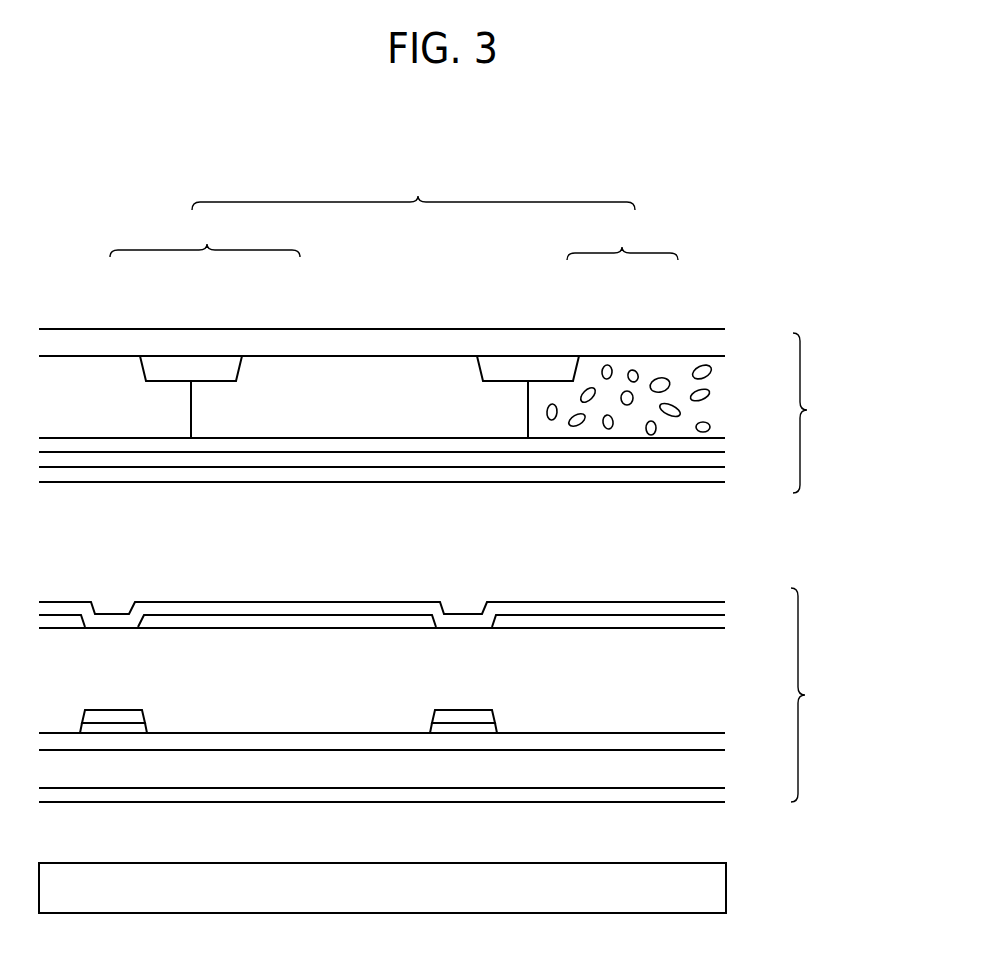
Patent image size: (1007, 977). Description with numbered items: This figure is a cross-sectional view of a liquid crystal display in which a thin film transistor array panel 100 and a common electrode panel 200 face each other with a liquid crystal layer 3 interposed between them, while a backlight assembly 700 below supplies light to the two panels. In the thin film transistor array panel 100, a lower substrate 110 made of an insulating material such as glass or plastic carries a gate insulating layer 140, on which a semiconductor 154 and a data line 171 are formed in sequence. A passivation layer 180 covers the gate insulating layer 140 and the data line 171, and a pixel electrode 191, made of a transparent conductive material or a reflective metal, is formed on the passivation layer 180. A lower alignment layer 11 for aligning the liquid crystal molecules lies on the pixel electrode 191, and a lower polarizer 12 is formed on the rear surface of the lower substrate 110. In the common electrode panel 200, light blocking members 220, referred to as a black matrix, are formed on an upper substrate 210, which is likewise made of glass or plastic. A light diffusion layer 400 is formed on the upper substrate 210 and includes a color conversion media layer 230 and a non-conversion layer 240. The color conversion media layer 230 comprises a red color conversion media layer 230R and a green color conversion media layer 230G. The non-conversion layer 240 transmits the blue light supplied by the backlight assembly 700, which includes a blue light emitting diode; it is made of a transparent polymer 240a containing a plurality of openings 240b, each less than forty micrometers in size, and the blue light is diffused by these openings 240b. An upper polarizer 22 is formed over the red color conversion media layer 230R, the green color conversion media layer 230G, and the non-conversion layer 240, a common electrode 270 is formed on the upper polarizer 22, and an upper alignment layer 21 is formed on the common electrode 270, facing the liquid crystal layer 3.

The liquid crystal layer 3 is at (713, 538).
The lower alignment layer 11 is at (713, 609).
The lower polarizer 12 is at (713, 797).
The upper alignment layer 21 is at (713, 475).
The upper polarizer 22 is at (713, 446).
The thin film transistor array panel 100 is at (819, 695).
The lower substrate 110 is at (713, 772).
The gate insulating layer 140 is at (713, 741).
The semiconductor 154 is at (93, 728).
The data line 171 is at (128, 717).
The passivation layer 180 is at (713, 688).
The pixel electrode 191 is at (292, 622).
The common electrode panel 200 is at (820, 413).
The upper substrate 210 is at (713, 341).
The light blocking member 220 is at (510, 370).
The color conversion media layer 230 is at (205, 235).
The red color conversion media layer 230R is at (85, 387).
The green color conversion media layer 230G is at (305, 387).
The non-conversion layer 240 is at (622, 238).
The transparent polymer 240a is at (653, 367).
The opening 240b is at (608, 365).
The common electrode 270 is at (713, 459).
The light diffusion layer 400 is at (413, 188).
The backlight assembly 700 is at (713, 887).